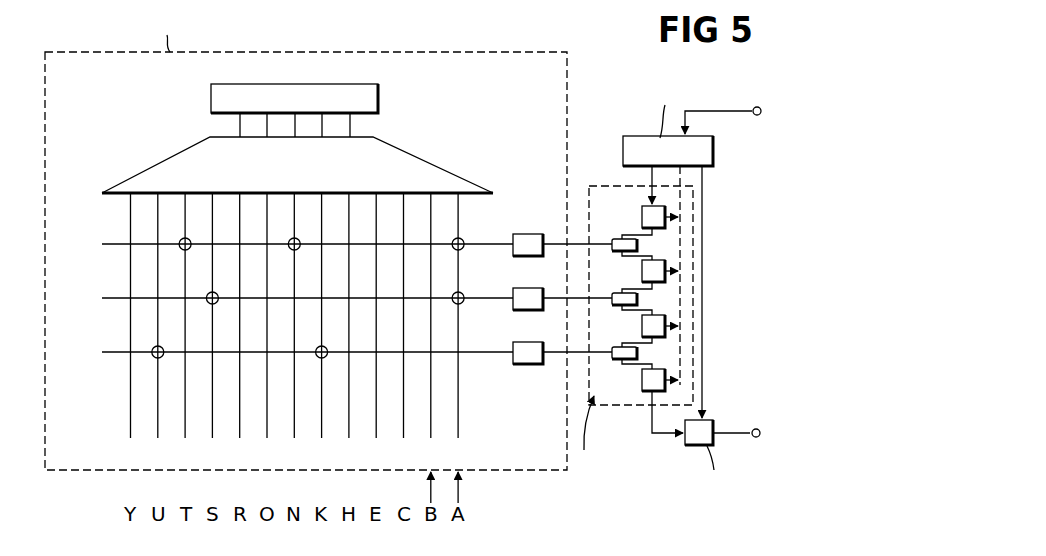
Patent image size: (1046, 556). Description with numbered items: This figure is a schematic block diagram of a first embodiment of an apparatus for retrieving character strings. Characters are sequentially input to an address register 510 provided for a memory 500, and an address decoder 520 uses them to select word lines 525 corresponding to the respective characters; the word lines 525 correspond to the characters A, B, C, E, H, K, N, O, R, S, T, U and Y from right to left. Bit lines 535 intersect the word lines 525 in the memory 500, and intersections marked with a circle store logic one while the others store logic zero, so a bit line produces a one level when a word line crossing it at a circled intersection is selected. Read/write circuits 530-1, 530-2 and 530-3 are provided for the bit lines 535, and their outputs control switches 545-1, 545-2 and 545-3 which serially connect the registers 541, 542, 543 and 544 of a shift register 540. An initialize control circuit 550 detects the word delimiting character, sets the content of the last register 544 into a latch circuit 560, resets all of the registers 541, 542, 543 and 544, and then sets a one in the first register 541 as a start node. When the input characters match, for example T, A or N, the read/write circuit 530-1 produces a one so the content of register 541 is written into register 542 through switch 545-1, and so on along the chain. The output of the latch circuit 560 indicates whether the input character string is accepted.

The memory 500 is at (569, 75).
The address register 510 is at (379, 99).
The address decoder 520 is at (432, 165).
The word lines 525 is at (432, 417).
The read/write circuit 530-1 is at (547, 213).
The read/write circuit 530-2 is at (547, 267).
The read/write circuit 530-3 is at (547, 321).
The bit lines 535 is at (106, 352).
The shift register 540 is at (632, 406).
The register 541 is at (664, 207).
The register 542 is at (664, 261).
The register 543 is at (664, 316).
The register 544 is at (664, 370).
The switch 545-1 is at (617, 239).
The switch 545-2 is at (617, 293).
The switch 545-3 is at (617, 347).
The initialize control circuit 550 is at (634, 113).
The latch circuit 560 is at (701, 446).